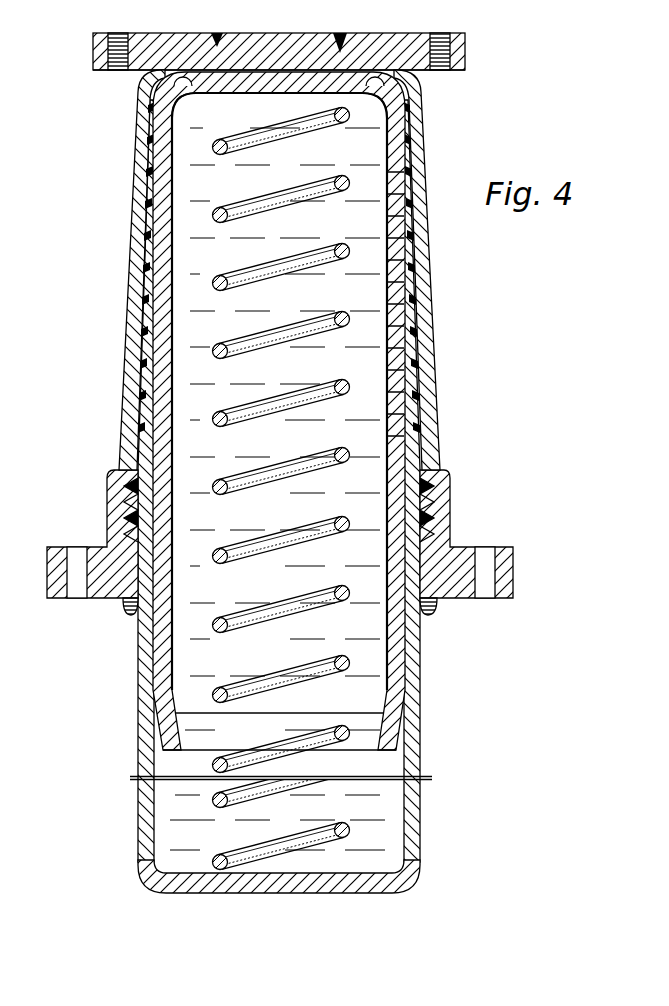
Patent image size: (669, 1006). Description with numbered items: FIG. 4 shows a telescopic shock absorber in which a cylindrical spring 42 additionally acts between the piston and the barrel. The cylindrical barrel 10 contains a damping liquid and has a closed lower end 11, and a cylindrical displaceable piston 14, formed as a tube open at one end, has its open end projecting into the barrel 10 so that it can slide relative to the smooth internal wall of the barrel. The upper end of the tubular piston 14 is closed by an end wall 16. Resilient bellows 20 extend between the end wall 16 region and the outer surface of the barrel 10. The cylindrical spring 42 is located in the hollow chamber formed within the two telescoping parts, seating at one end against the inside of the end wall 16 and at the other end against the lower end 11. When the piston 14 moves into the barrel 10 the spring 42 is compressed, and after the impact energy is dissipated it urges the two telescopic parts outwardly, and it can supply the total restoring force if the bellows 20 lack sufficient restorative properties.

The cylindrical barrel 10 is at (407, 815).
The closed lower end 11 is at (343, 885).
The cylindrical displaceable piston 14 is at (393, 146).
The end wall 16 is at (362, 97).
The resilient bellows 20 is at (420, 265).
The cylindrical spring 42 is at (353, 383).